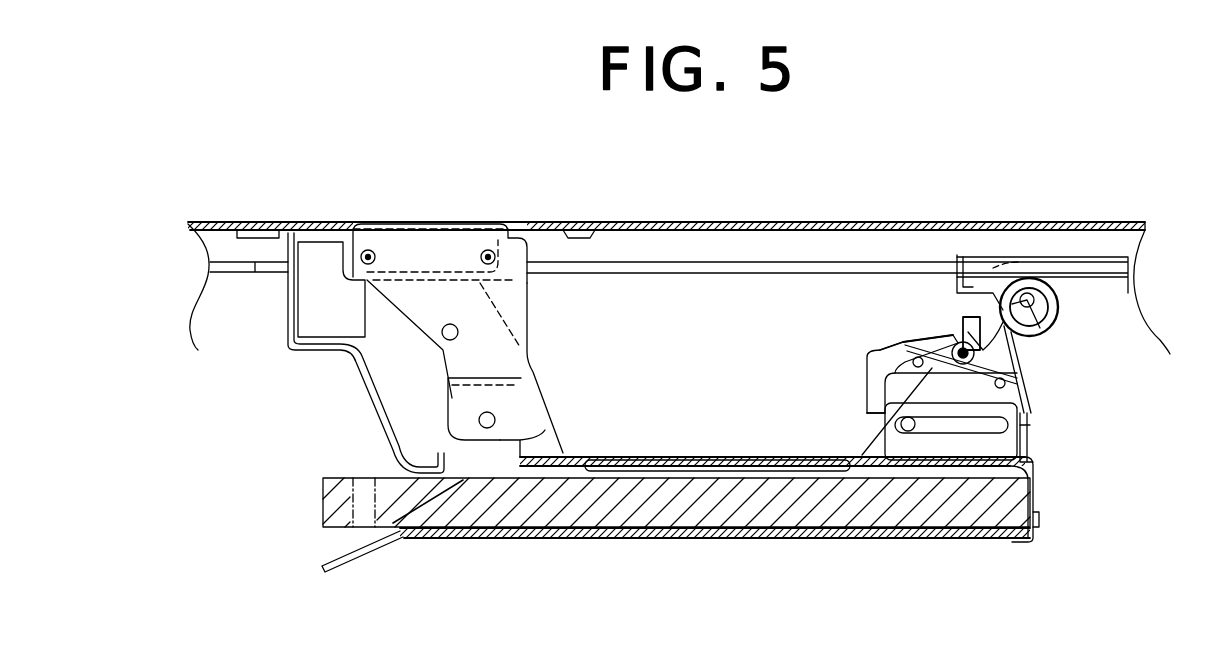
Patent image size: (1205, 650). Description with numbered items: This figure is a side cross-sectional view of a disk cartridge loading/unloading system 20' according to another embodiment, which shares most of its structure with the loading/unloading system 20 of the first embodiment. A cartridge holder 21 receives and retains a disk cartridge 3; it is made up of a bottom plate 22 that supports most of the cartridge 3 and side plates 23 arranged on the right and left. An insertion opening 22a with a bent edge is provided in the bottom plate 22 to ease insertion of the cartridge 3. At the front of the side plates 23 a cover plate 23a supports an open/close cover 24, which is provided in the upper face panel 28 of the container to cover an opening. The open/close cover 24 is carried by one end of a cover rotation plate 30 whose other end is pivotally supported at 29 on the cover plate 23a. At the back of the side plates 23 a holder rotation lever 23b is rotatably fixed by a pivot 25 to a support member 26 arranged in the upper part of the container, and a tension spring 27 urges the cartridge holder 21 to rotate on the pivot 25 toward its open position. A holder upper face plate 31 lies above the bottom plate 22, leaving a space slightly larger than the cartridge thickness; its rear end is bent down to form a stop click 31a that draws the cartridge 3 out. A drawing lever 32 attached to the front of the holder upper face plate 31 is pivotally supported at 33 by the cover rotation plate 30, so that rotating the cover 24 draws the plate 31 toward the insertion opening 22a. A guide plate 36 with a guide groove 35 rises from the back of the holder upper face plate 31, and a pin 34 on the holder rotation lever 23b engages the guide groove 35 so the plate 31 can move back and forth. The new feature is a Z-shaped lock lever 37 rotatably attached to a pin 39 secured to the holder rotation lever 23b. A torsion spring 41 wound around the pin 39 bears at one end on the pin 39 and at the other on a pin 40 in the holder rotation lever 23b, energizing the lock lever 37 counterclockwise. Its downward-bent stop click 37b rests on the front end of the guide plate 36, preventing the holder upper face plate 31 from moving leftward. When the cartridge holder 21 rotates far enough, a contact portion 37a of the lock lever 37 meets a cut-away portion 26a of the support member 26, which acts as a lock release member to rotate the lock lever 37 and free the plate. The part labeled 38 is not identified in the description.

The disk cartridge 3 is at (322, 510).
The disk cartridge loading/unloading system 20 is at (669, 221).
The disk cartridge loading/unloading system 20' is at (196, 420).
The cartridge holder 21 is at (430, 542).
The bottom plate 22 is at (560, 540).
The insertion opening 22a is at (345, 545).
The side plates 23 is at (660, 458).
The cover plate 23a is at (375, 392).
The holder rotation lever 23b is at (880, 452).
The open/close cover 24 is at (368, 222).
The pivot 25 is at (1045, 338).
The support member 26 is at (1052, 280).
The cut-away portion 26a is at (975, 265).
The tension spring 27 is at (1030, 425).
The upper face panel 28 is at (768, 222).
The pivotal point 29 is at (452, 324).
The cover rotation plate 30 is at (530, 298).
The holder upper face plate 31 is at (712, 457).
The stop click 31a is at (1040, 522).
The drawing lever 32 is at (545, 438).
The pivotal support point 33 is at (522, 380).
The pin 34 is at (915, 430).
The guide groove 35 is at (1035, 465).
The guide plate 36 is at (1040, 505).
The lock lever 37 is at (866, 395).
The contact portion 37a is at (962, 322).
The stop click 37b is at (868, 420).
The arm 38 is at (868, 352).
The pin 39 is at (957, 340).
The pin 40 is at (1033, 380).
The torsion spring 41 is at (902, 350).